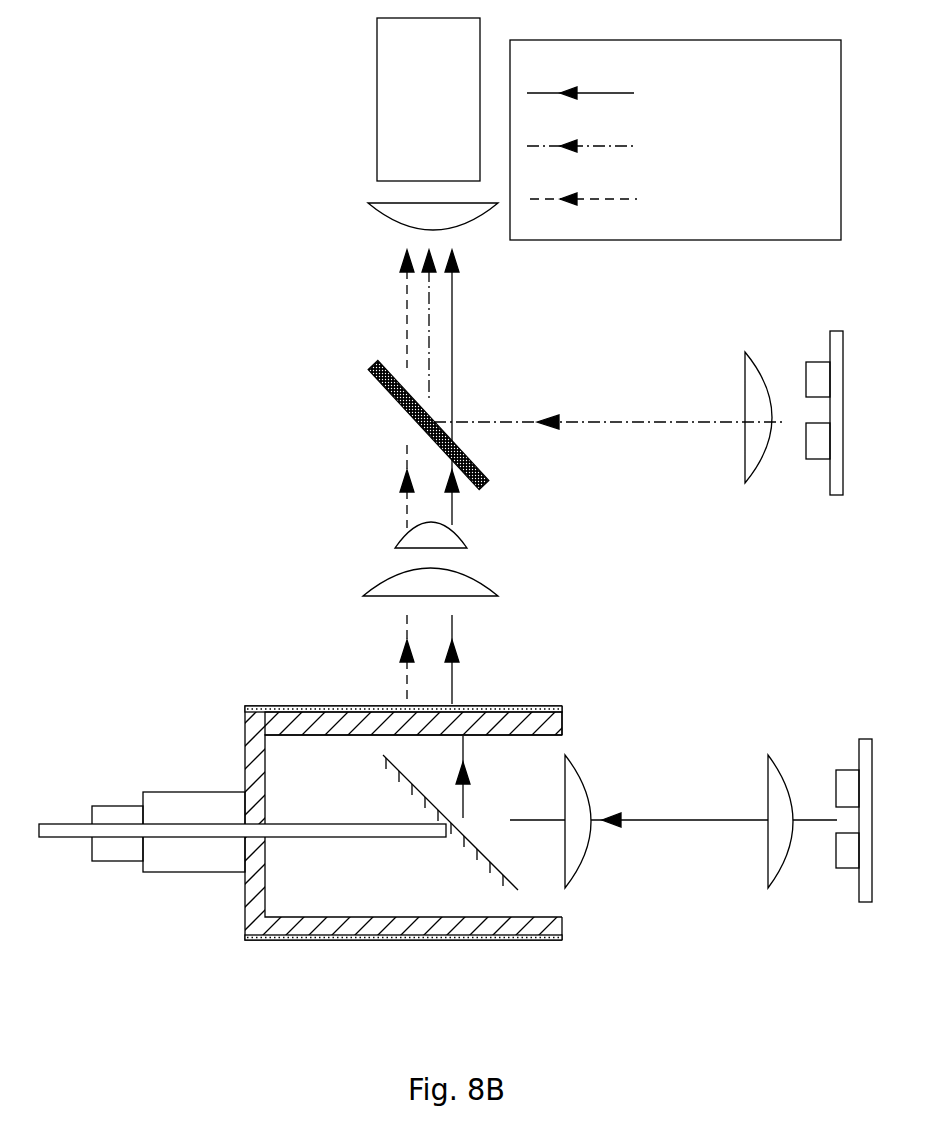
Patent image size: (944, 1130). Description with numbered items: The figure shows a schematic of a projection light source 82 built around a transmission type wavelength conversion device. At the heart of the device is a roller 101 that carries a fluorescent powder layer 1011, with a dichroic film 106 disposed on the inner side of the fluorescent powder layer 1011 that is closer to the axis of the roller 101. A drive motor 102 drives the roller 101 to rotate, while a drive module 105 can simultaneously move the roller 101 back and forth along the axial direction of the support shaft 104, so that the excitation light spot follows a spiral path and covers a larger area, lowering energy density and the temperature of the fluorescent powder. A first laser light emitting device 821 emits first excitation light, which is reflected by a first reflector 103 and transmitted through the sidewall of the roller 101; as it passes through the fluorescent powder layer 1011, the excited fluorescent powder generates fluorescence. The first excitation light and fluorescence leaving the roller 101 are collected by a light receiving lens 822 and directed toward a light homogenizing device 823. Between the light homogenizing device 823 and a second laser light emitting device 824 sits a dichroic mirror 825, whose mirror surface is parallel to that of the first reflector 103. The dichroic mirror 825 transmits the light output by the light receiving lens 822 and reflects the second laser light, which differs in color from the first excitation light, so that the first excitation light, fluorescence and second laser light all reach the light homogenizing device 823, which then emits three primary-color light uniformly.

The projection light source 82 is at (109, 100).
The light homogenizing device 823 is at (377, 98).
The dichroic mirror 825 is at (378, 384).
The second laser light emitting device 824 is at (830, 332).
The light receiving lens 822 is at (377, 585).
The first laser light emitting device 821 is at (859, 739).
The roller 101 is at (253, 880).
The fluorescent powder layer 1011 is at (278, 710).
The dichroic film 106 is at (360, 718).
The first reflector 103 is at (462, 855).
The support shaft 104 is at (292, 823).
The drive motor 102 is at (202, 792).
The drive module 105 is at (122, 805).